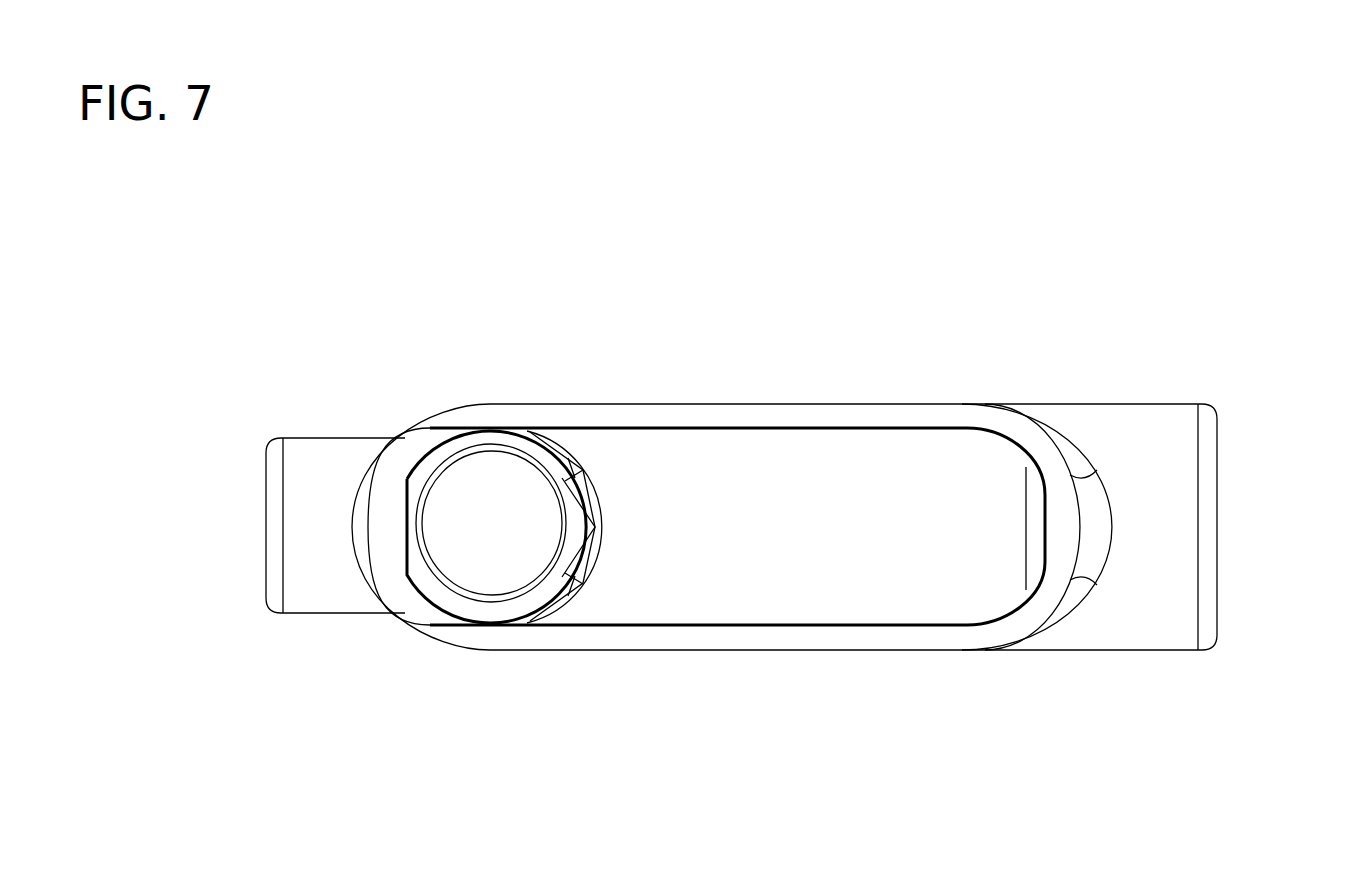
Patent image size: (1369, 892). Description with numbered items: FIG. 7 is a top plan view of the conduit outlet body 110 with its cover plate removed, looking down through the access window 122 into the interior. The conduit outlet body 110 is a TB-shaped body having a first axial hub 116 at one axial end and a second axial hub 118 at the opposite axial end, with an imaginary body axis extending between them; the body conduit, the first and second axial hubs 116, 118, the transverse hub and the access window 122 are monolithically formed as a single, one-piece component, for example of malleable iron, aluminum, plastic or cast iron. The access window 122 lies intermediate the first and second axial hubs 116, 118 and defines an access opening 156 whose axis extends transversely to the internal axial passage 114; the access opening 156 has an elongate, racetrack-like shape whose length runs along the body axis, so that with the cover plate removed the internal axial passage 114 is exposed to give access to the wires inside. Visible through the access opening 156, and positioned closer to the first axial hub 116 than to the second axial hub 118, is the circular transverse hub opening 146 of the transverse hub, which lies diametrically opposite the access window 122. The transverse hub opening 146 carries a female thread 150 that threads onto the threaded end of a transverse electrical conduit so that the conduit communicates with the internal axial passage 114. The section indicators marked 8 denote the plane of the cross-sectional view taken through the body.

The conduit outlet body 110 is at (1058, 203).
The internal axial passage 114 is at (802, 505).
The first axial hub 116 is at (268, 609).
The second axial hub 118 is at (1203, 649).
The access window 122 is at (647, 417).
The transverse hub opening 146 is at (467, 522).
The female thread 150 is at (450, 582).
The access opening 156 is at (728, 624).
The section line 8- 8 is at (226, 528).